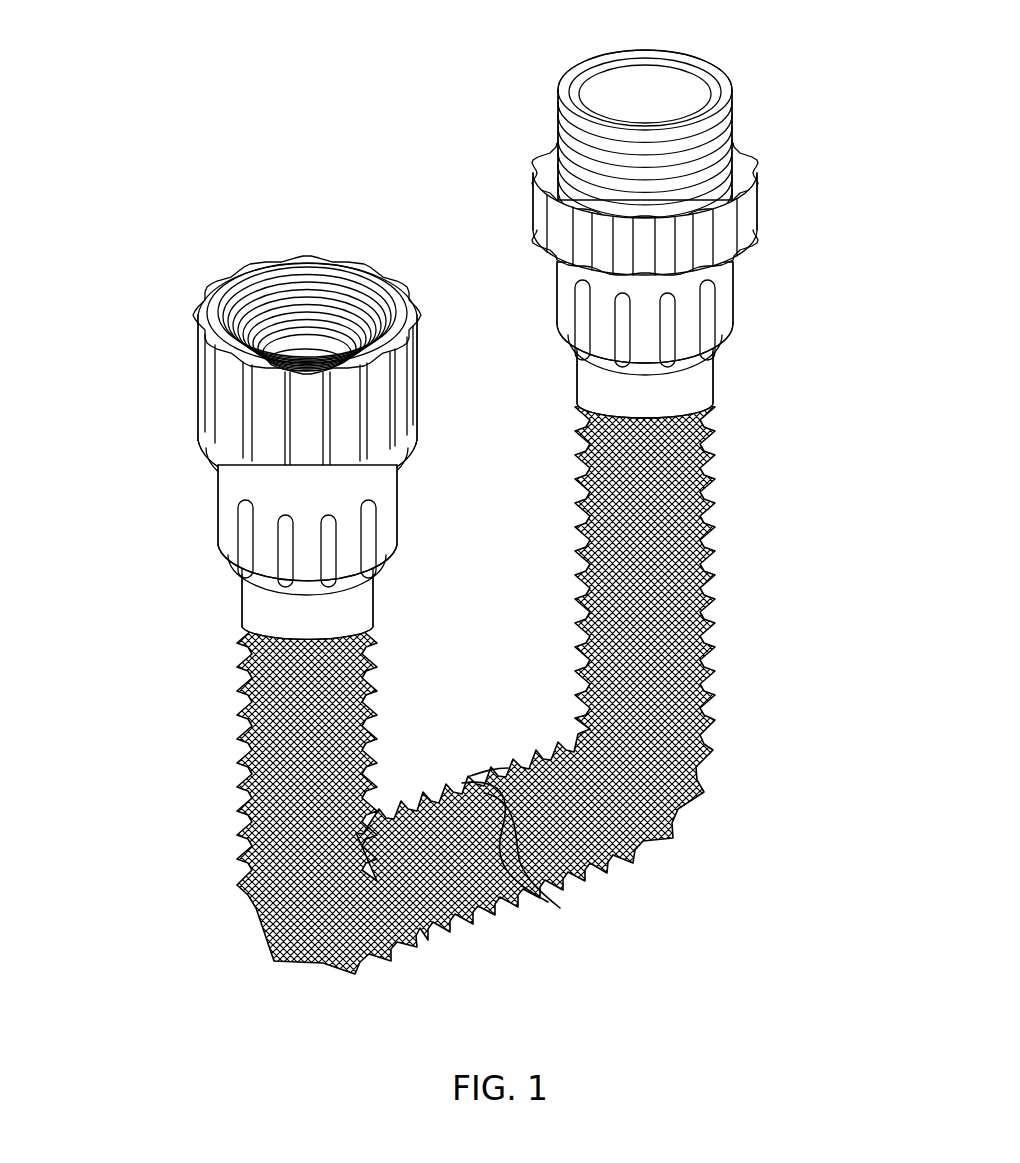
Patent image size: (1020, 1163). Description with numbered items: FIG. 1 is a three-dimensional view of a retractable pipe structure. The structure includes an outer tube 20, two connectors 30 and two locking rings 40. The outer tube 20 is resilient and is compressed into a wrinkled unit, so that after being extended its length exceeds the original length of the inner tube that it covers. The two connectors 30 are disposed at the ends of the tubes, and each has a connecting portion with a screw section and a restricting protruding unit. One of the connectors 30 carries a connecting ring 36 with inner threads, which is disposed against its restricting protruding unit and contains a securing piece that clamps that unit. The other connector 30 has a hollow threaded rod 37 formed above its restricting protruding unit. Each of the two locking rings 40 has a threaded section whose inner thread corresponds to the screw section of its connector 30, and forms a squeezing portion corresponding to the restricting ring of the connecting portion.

The outer tube 20 is at (712, 518).
The connector 30 is at (628, 144).
The connecting ring 36 is at (200, 385).
The hollow threaded rod 37 is at (560, 128).
The locking ring 40 is at (205, 492).